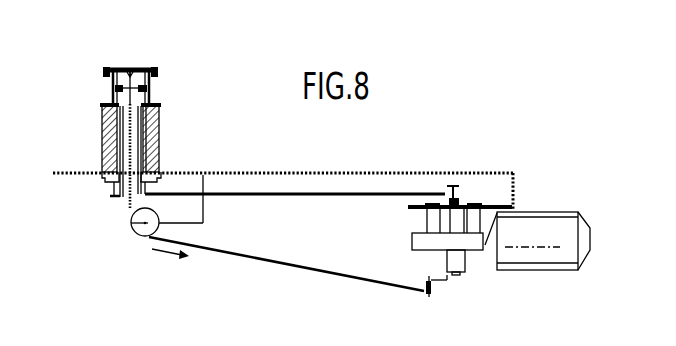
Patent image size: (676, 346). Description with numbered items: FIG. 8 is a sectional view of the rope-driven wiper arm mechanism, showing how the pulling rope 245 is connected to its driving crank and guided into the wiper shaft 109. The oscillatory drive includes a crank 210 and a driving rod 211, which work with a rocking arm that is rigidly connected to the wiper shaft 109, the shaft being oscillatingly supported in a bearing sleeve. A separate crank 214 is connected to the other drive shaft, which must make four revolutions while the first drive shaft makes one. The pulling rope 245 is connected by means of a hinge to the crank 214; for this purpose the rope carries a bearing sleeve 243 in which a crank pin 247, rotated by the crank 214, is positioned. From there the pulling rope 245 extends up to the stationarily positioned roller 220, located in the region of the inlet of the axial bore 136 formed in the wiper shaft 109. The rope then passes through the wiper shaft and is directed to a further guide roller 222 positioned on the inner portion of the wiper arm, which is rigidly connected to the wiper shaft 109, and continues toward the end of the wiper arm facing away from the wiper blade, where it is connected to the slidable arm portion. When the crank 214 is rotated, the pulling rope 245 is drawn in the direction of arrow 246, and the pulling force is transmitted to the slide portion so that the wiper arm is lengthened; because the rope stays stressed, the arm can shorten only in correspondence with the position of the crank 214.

The guide roller 222 is at (140, 76).
The axial bore 136 is at (153, 102).
The wiper shaft 109 is at (151, 143).
The driving rod 211 is at (278, 197).
The roller 220 is at (131, 223).
The pulling rope 245 is at (311, 262).
The arrow 246 is at (165, 255).
The crank 210 is at (462, 201).
The crank 214 is at (447, 277).
The crank pin 247 is at (425, 294).
The bearing sleeve 243 is at (432, 290).